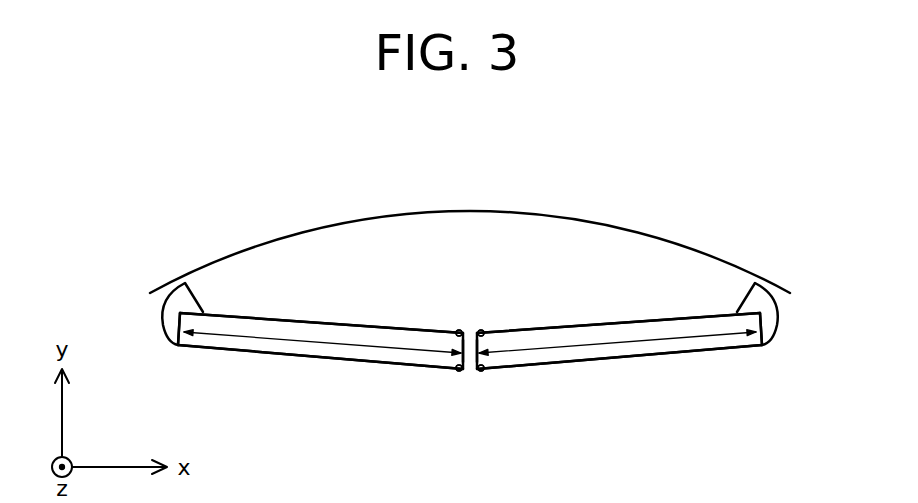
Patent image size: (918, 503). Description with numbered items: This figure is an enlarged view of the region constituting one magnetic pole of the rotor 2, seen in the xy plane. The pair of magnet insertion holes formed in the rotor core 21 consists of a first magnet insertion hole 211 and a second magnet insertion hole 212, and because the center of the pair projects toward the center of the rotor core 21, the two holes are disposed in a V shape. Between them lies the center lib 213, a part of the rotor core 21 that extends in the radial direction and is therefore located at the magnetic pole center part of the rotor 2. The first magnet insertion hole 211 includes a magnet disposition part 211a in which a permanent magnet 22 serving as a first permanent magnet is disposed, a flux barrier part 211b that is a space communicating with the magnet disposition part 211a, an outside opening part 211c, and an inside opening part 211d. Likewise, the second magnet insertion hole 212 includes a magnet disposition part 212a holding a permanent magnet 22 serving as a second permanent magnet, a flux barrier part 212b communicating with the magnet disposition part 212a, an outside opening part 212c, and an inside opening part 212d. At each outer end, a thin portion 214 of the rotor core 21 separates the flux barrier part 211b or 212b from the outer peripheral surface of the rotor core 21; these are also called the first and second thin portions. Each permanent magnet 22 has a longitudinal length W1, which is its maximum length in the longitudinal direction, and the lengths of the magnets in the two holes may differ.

The rotor 2 is at (276, 206).
The rotor core 21 is at (476, 226).
The permanent magnet 22 is at (282, 348).
The first magnet insertion hole 211 is at (462, 283).
The magnet disposition part 211a is at (342, 333).
The flux barrier part 211b is at (188, 304).
The outside opening part 211c is at (460, 330).
The inside opening part 211d is at (458, 372).
The second magnet insertion hole 212 is at (478, 283).
The magnet disposition part 212a is at (594, 333).
The flux barrier part 212b is at (738, 303).
The outside opening part 212c is at (480, 330).
The inside opening part 212d is at (481, 372).
The center lib 213 is at (470, 358).
The thin portion 214 is at (171, 282).
The length of permanent magnet in longitudinal direction W1 is at (228, 336).